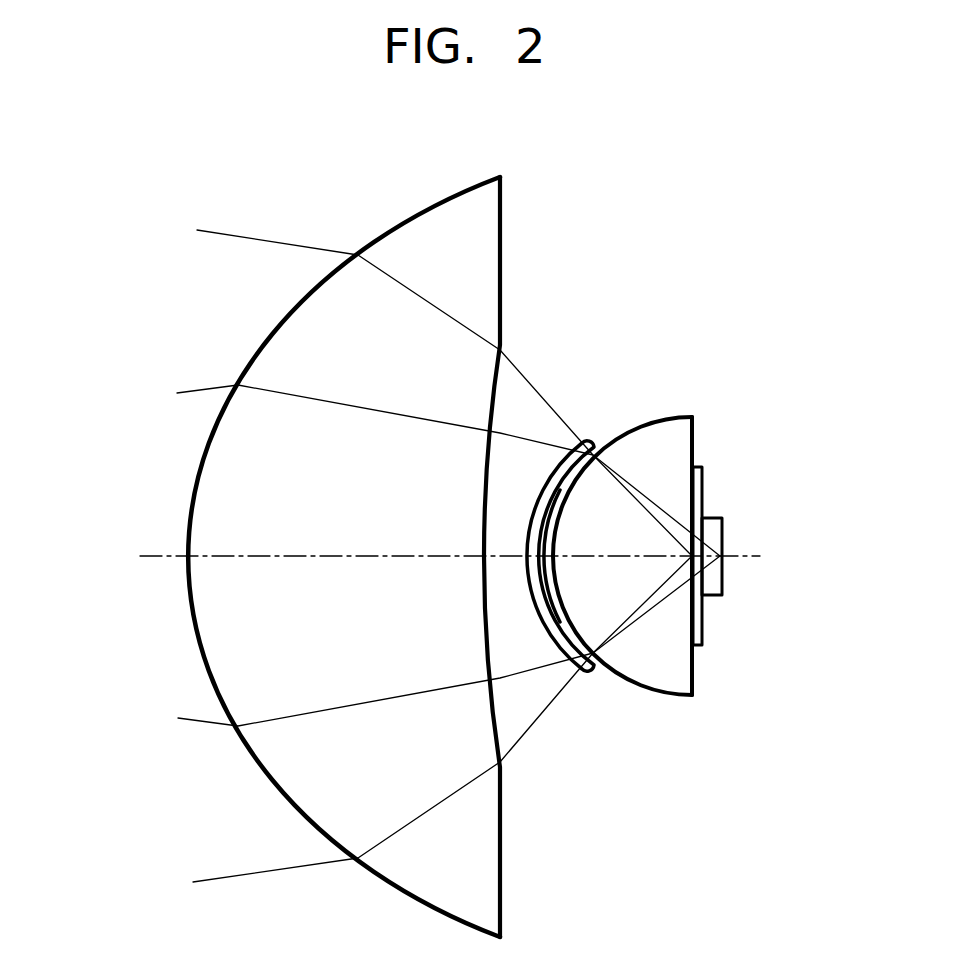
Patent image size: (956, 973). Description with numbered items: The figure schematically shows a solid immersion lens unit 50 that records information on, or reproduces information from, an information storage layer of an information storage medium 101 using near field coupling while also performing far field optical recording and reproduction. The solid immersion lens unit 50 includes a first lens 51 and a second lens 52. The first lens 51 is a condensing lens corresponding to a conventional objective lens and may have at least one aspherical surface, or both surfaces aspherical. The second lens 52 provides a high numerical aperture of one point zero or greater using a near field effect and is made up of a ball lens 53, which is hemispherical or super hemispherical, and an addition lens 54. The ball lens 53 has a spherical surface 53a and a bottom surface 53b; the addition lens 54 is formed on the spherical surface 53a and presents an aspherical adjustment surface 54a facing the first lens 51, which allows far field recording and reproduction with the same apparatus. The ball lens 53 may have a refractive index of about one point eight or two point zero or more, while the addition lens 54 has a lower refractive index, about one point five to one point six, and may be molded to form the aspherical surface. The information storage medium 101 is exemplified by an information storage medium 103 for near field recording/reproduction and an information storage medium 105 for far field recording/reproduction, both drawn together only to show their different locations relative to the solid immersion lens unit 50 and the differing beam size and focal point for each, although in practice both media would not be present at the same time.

The solid immersion lens unit 50 is at (162, 657).
The first lens 51 is at (417, 227).
The second lens 52 is at (675, 350).
The ball lens 53 is at (682, 523).
The spherical surface 53a is at (561, 510).
The bottom surface 53b is at (693, 443).
The addition lens 54 is at (562, 483).
The aspherical adjustment surface 54a is at (535, 603).
The information storage medium 101 is at (828, 757).
The information storage medium for near field recording/reproduction 103 is at (698, 647).
The information storage medium for far field recording/reproduction 105 is at (712, 598).